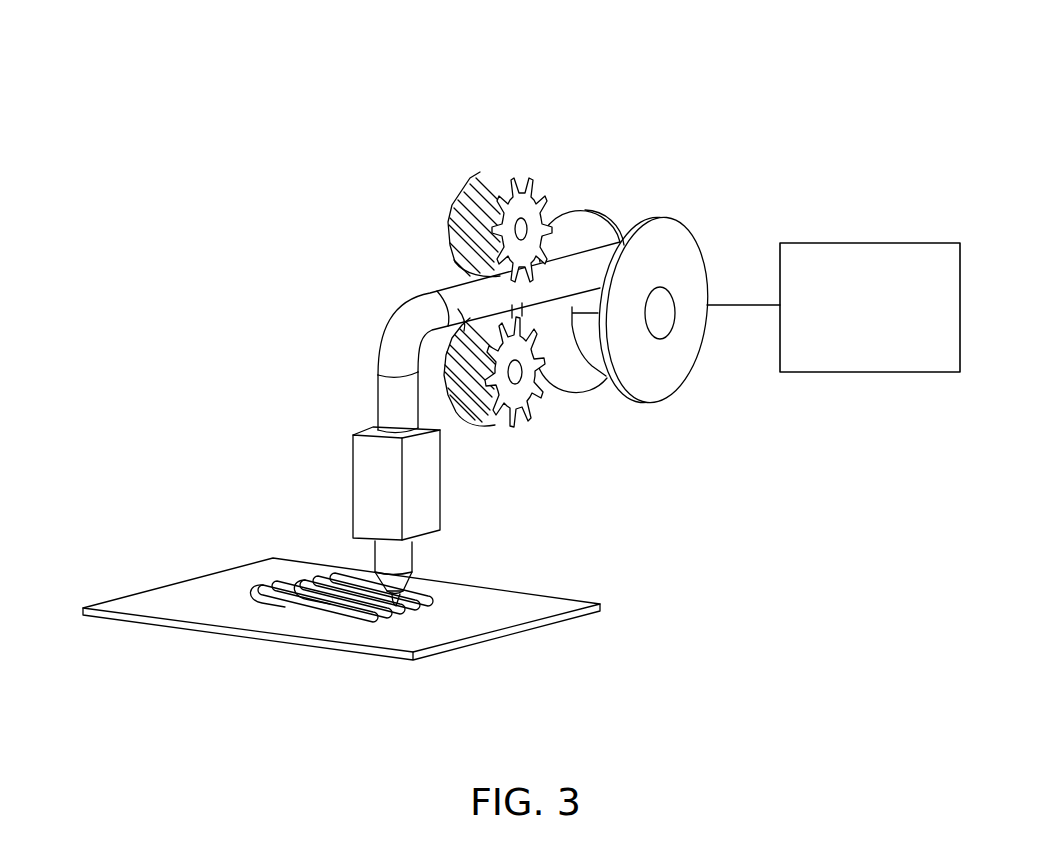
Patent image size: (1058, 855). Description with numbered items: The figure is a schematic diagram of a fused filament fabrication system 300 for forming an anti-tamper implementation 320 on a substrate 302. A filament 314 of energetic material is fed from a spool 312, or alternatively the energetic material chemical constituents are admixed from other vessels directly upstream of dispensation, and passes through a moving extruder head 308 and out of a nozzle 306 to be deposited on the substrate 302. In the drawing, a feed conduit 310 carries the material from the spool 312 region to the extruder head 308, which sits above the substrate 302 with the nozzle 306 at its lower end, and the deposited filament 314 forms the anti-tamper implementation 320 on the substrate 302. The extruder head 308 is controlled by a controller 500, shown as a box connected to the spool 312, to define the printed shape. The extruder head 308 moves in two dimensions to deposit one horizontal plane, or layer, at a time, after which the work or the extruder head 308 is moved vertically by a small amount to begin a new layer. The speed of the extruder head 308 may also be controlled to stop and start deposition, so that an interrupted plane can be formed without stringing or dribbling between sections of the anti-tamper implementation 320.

The fused filament fabrication system 300 is at (657, 100).
The substrate 302 is at (500, 610).
The nozzle 306 is at (413, 560).
The extruder head 308 is at (413, 487).
The feed pipe 310 is at (501, 302).
The spool 312 is at (667, 215).
The filament 314 is at (283, 588).
The anti-tamper implementation 320 is at (113, 573).
The controller 500 is at (868, 243).